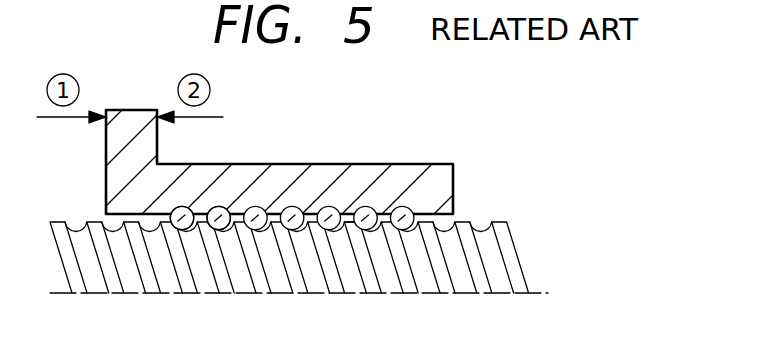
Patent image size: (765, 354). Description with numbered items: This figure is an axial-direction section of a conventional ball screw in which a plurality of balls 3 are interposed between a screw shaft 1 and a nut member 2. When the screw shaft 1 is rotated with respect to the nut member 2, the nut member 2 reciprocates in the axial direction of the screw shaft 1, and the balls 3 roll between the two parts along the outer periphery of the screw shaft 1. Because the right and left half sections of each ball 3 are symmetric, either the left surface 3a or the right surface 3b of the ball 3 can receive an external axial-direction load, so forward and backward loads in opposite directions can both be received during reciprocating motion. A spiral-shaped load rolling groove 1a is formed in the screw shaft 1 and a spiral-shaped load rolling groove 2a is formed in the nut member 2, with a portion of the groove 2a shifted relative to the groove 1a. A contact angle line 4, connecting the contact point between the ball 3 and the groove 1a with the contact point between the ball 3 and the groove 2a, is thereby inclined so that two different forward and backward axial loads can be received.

The screw shaft 1 is at (503, 228).
The load rolling groove 1a is at (418, 230).
The nut member 2 is at (333, 172).
The load rolling groove 2a is at (403, 207).
The balls 3 is at (288, 210).
The left surface of ball 3a is at (201, 206).
The right surface of ball 3b is at (234, 212).
The contact angle line 4 is at (358, 227).